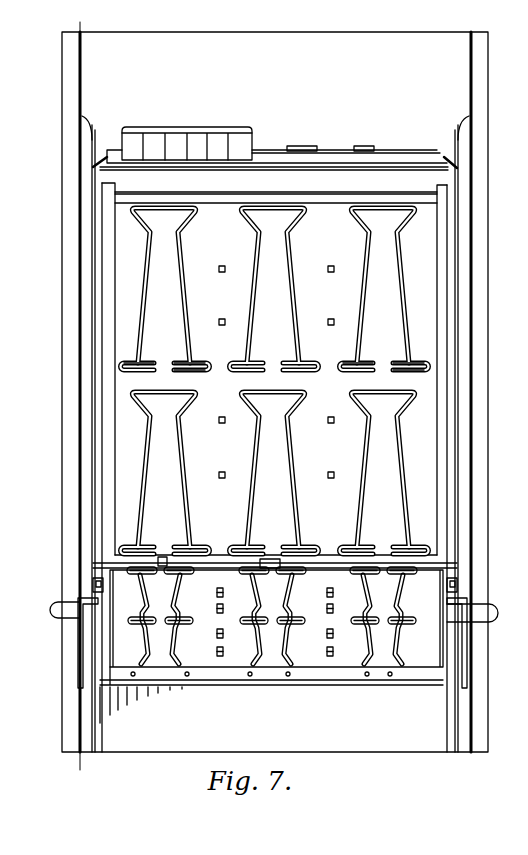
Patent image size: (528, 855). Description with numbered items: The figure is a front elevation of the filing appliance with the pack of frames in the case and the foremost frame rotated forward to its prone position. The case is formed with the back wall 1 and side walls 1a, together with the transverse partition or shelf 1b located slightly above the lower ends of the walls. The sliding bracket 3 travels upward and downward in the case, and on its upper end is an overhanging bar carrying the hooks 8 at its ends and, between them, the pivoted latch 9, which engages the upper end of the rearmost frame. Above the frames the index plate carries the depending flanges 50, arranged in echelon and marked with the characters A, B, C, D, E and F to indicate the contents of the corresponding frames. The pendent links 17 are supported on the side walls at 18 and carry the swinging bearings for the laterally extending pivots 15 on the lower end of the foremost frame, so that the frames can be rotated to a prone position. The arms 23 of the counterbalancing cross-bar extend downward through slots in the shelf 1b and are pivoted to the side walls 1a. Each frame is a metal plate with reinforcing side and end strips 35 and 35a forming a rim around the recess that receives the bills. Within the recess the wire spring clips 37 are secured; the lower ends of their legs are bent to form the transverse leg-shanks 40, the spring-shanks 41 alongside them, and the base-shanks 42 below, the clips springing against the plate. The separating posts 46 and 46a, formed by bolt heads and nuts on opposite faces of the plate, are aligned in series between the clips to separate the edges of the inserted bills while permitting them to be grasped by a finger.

The back wall 1 is at (275, 392).
The side walls 1a is at (79, 300).
The transverse partition or shelf 1b is at (53, 612).
The sliding bracket 3 is at (80, 398).
The hooks 8 is at (100, 160).
The latch 9 is at (338, 150).
The laterally extending pivots 15 is at (95, 582).
The pendent links 17 is at (100, 184).
The link pivot support 18 is at (94, 135).
The arms 23 is at (79, 646).
The reinforcing side strips 35 is at (117, 432).
The reinforcing end strips 35a is at (328, 200).
The spring clips 37 is at (358, 312).
The leg-shanks 40 is at (178, 364).
The spring-shanks 41 is at (201, 366).
The base-shanks 42 is at (197, 372).
The separating posts 46 is at (229, 474).
The separating posts 46a is at (324, 650).
The depending flanges 50 is at (198, 127).